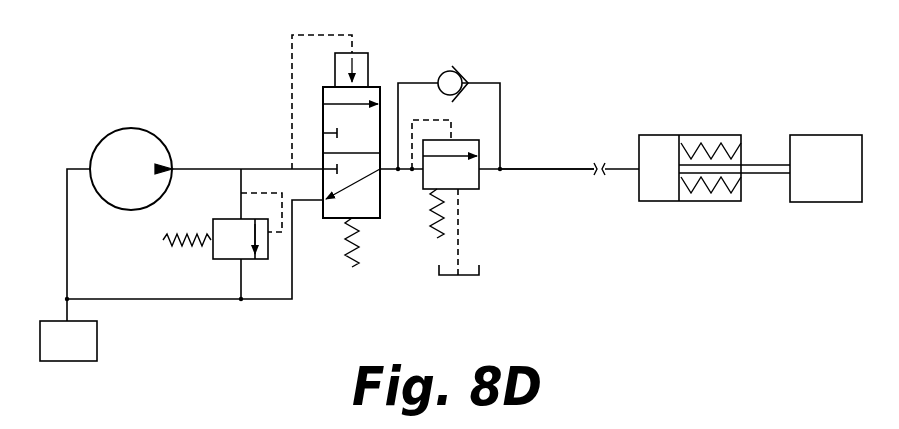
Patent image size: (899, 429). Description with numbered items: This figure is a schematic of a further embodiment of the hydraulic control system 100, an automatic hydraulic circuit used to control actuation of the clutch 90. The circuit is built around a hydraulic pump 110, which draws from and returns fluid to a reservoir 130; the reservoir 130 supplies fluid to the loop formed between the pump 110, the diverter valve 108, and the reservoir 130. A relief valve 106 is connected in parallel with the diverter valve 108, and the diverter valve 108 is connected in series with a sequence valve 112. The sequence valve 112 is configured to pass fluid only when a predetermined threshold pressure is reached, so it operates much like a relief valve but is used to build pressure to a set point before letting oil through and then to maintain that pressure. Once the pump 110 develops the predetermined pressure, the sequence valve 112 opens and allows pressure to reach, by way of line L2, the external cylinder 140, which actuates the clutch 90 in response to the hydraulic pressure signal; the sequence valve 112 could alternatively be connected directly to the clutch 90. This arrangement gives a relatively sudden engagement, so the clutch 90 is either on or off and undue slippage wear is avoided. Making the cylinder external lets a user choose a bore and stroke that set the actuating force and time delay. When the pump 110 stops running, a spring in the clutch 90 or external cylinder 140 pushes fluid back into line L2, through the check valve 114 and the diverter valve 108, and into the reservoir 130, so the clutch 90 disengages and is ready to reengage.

The hydraulic control system 100 is at (80, 122).
The hydraulic pump 110 is at (143, 130).
The relief valve 106 is at (213, 255).
The reservoir 130 is at (97, 353).
The diverter valve 108 is at (368, 218).
The check valve 114 is at (455, 67).
The sequence valve 112 is at (479, 180).
The line L2 is at (568, 166).
The external cylinder 140 is at (690, 137).
The clutch 90 is at (828, 140).